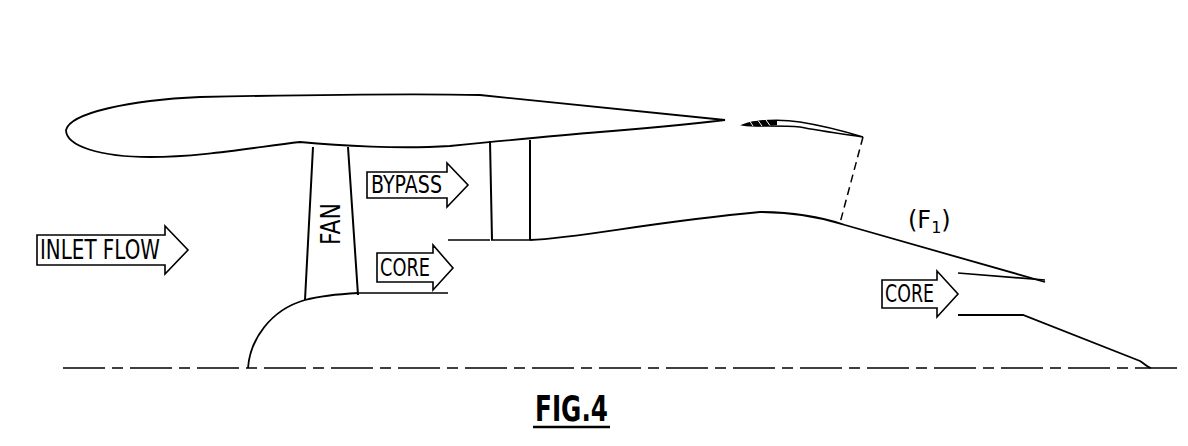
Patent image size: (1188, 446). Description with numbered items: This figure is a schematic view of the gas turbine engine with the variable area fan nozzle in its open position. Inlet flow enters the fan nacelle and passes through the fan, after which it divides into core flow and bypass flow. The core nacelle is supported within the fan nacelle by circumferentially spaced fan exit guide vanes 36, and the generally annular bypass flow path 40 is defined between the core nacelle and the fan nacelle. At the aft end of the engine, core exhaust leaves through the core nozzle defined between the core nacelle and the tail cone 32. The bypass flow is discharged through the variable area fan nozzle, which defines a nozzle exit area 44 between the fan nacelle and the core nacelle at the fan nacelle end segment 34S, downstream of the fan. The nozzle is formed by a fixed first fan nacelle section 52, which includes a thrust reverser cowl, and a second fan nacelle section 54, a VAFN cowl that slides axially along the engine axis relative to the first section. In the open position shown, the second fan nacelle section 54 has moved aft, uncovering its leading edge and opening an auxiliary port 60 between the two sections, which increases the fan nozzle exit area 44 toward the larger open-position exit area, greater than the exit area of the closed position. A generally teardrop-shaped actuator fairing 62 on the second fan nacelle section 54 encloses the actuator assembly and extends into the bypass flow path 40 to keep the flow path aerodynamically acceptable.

The first fan nacelle section 52 is at (663, 99).
The auxiliary port 60 is at (728, 127).
The actuator fairing 62 is at (760, 113).
The second fan nacelle section 54 is at (823, 113).
The fan nacelle end segment 34S is at (864, 137).
The nozzle exit area 44 is at (847, 197).
The fan exit guide vanes 36 is at (531, 192).
The bypass flow path 40 is at (641, 215).
The tail cone 32 is at (1092, 340).